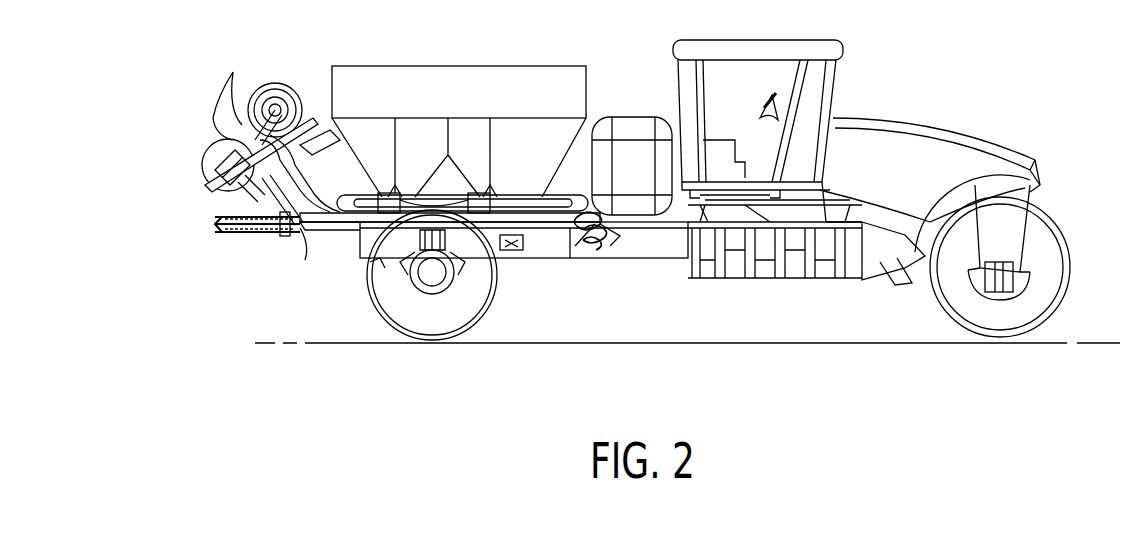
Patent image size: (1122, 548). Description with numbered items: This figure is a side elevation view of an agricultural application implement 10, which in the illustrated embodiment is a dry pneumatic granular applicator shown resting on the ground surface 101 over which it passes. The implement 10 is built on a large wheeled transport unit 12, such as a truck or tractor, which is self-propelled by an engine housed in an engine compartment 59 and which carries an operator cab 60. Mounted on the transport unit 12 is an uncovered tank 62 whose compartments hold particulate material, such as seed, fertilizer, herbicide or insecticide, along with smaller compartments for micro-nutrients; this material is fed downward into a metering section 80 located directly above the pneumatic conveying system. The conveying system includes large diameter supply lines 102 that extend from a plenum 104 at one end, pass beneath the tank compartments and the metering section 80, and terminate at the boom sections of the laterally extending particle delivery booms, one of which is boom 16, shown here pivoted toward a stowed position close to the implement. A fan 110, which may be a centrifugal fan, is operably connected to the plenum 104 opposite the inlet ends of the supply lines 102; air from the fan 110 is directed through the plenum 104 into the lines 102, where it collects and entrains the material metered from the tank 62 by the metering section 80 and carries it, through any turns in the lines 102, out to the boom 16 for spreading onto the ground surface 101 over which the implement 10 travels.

The agricultural application implement 10 is at (748, 314).
The wheeled transport unit 12 is at (860, 104).
The particle delivery boom 16 is at (618, 258).
The engine compartment 59 is at (962, 128).
The operator cab 60 is at (760, 40).
The tank 62 is at (434, 50).
The metering section 80 is at (383, 240).
The ground surface 101 is at (926, 350).
The supply line 102 is at (306, 232).
The plenum 104 is at (266, 230).
The fan 110 is at (271, 127).